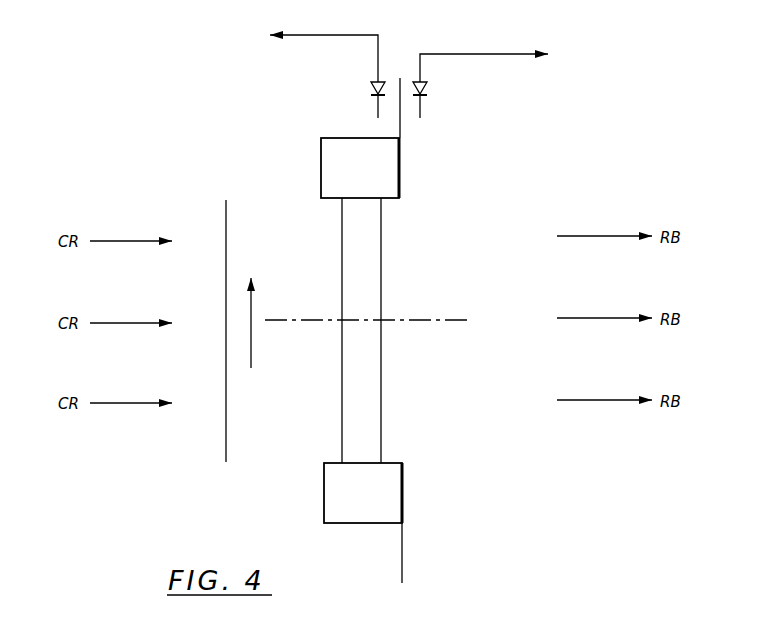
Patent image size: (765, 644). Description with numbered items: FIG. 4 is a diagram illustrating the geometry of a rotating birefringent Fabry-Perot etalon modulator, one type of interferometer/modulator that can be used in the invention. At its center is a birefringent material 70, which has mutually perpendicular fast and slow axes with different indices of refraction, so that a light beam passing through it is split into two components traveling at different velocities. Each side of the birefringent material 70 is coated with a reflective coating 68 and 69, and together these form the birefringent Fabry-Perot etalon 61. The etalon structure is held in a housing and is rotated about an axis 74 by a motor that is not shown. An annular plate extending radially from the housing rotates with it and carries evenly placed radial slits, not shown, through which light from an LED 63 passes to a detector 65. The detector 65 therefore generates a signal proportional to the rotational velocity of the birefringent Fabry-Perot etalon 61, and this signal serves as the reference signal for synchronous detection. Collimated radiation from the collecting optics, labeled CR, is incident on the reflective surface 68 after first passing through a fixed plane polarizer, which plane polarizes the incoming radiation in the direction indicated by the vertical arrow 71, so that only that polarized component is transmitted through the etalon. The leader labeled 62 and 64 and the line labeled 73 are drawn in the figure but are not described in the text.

The birefringent Fabry-Perot etalon 61 is at (262, 140).
The output lead 62 is at (302, 37).
The LED 63 is at (371, 88).
The output lead 64 is at (520, 58).
The detector 65 is at (428, 90).
The reflective coating 68 is at (342, 244).
The reflective coating 69 is at (381, 283).
The birefringent material 70 is at (360, 352).
The vertical arrow 71 is at (257, 290).
The shield plate 73 is at (224, 446).
The axis 74 is at (313, 323).